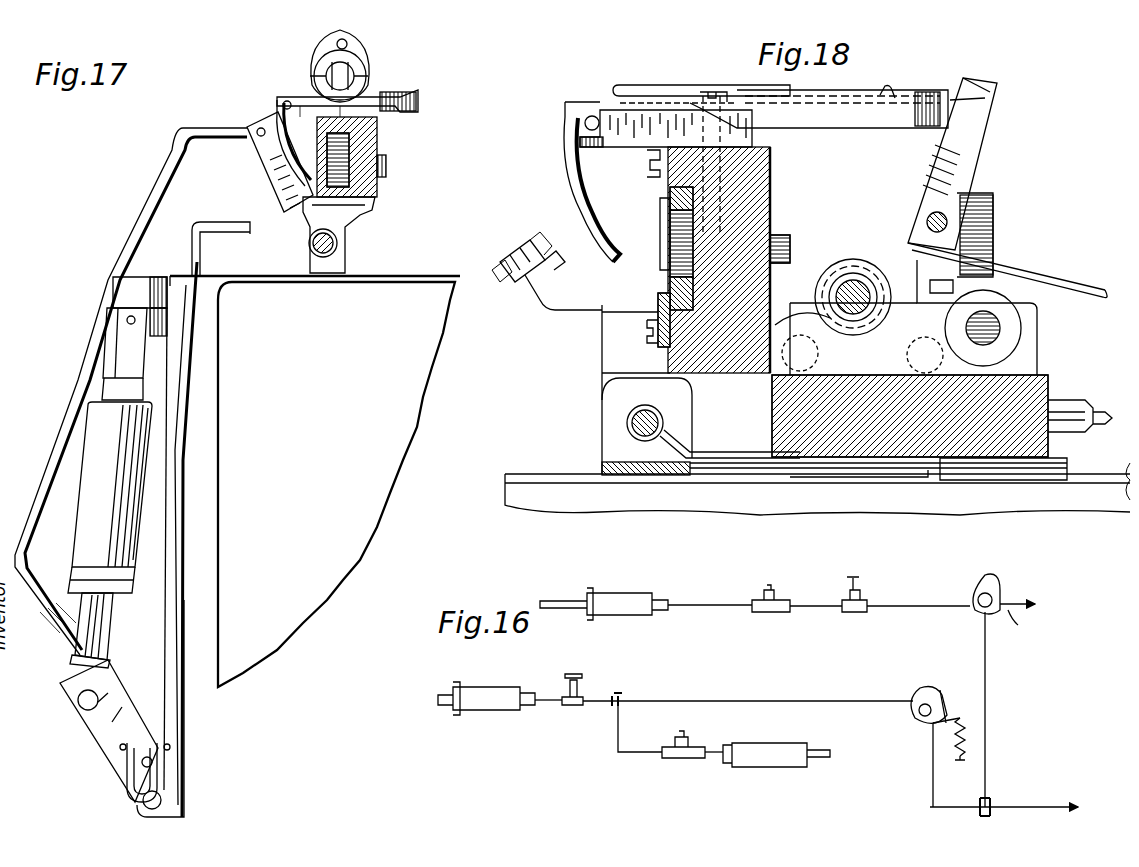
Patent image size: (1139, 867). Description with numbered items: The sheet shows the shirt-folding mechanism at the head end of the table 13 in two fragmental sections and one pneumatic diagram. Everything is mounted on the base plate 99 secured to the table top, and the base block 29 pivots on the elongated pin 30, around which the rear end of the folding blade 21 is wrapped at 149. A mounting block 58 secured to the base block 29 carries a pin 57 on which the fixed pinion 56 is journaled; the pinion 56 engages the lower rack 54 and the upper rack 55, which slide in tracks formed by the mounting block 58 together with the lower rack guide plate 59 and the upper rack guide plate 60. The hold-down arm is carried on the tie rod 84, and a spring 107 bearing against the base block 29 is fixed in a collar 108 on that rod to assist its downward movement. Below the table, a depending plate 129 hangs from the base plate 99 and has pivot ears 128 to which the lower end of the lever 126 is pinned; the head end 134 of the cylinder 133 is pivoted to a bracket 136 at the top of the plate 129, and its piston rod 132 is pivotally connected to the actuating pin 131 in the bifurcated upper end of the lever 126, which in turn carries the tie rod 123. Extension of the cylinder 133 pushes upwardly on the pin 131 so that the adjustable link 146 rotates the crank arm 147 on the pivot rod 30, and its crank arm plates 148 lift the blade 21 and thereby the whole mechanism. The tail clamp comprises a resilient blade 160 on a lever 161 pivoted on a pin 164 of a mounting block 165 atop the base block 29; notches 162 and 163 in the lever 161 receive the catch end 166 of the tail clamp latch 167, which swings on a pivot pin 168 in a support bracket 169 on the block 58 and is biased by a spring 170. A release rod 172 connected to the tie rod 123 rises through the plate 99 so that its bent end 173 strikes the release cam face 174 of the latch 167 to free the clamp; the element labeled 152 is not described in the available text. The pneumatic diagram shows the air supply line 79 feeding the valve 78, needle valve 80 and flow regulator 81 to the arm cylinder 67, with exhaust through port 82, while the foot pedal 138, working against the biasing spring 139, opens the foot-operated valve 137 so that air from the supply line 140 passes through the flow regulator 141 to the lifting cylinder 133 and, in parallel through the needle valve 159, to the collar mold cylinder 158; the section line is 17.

In FIG. 17, the table 13 is at (380, 388).
In FIG. 17, the section line 17 is at (135, 803).
In FIG. 18, the blade 21 is at (1070, 466).
In FIG. 18, the base block 29 is at (1040, 373).
In FIG. 17, the pivot pin 30 is at (340, 243).
In FIG. 18, the pivot pin 30 is at (640, 425).
In FIG. 18, the lower rack 54 is at (665, 295).
In FIG. 18, the upper rack 55 is at (670, 195).
In FIG. 17, the pinion 56 is at (350, 138).
In FIG. 18, the pinion 56 is at (670, 230).
In FIG. 17, the pin 57 is at (360, 168).
In FIG. 18, the pin 57 is at (790, 245).
In FIG. 18, the mounting block 58 is at (772, 194).
In FIG. 18, the lower rack guide plate 59 is at (666, 348).
In FIG. 18, the upper rack guide plate 60 is at (660, 204).
In FIG. 17, the cylinder 67 is at (366, 62).
In FIG. 16, the cylinder 67 is at (628, 592).
In FIG. 16, the valve 78 is at (1000, 582).
In FIG. 16, the air supply line 79 is at (990, 662).
In FIG. 16, the needle valve 80 is at (862, 594).
In FIG. 16, the flow regulator 81 is at (785, 600).
In FIG. 16, the exhaust port 82 is at (1022, 624).
In FIG. 18, the tie rod 84 is at (855, 290).
In FIG. 17, the base plate 99 is at (252, 276).
In FIG. 18, the spring 107 is at (873, 330).
In FIG. 18, the collar 108 is at (848, 335).
In FIG. 17, the tie rod 123 is at (152, 762).
In FIG. 17, the lever 126 is at (115, 708).
In FIG. 17, the mounting and pivot ears 128 is at (162, 800).
In FIG. 17, the depending plate 129 is at (184, 703).
In FIG. 17, the actuating pin 131 is at (110, 688).
In FIG. 17, the piston rod 132 is at (105, 620).
In FIG. 17, the cylinder 133 is at (110, 497).
In FIG. 16, the cylinder 133 is at (760, 767).
In FIG. 17, the head end 134 is at (125, 339).
In FIG. 17, the bracket 136 is at (113, 286).
In FIG. 16, the foot-operated valve 137 is at (925, 688).
In FIG. 16, the foot pedal 138 is at (962, 715).
In FIG. 16, the biasing spring 139 is at (968, 732).
In FIG. 16, the supply line 140 is at (933, 795).
In FIG. 16, the flow regulator 141 is at (690, 745).
In FIG. 17, the adjustable link 146 is at (168, 183).
In FIG. 17, the crank arm 147 is at (263, 160).
In FIG. 18, the crank arm plates 148 is at (1060, 432).
In FIG. 18, the wrapped rear end 149 is at (612, 403).
In FIG. 18, the bolt 152 is at (547, 271).
In FIG. 16, the air mold cylinder 158 is at (490, 690).
In FIG. 16, the needle valve 159 is at (571, 708).
In FIG. 18, the resilient blade 160 is at (1088, 290).
In FIG. 18, the lever 161 is at (968, 145).
In FIG. 18, the notch 162 is at (955, 120).
In FIG. 18, the notch 163 is at (990, 92).
In FIG. 18, the pin 164 is at (928, 222).
In FIG. 18, the mounting block 165 is at (995, 210).
In FIG. 18, the catch end 166 is at (932, 90).
In FIG. 17, the tail clamp latch 167 is at (273, 100).
In FIG. 18, the tail clamp latch 167 is at (565, 125).
In FIG. 17, the pivot pin 168 is at (289, 101).
In FIG. 18, the pivot pin 168 is at (593, 116).
In FIG. 18, the support bracket 169 is at (620, 147).
In FIG. 17, the spring 170 is at (347, 103).
In FIG. 18, the spring 170 is at (688, 85).
In FIG. 17, the release rod 172 is at (185, 450).
In FIG. 17, the bent upper end 173 is at (215, 222).
In FIG. 17, the release cam face 174 is at (288, 138).
In FIG. 18, the release cam face 174 is at (568, 173).